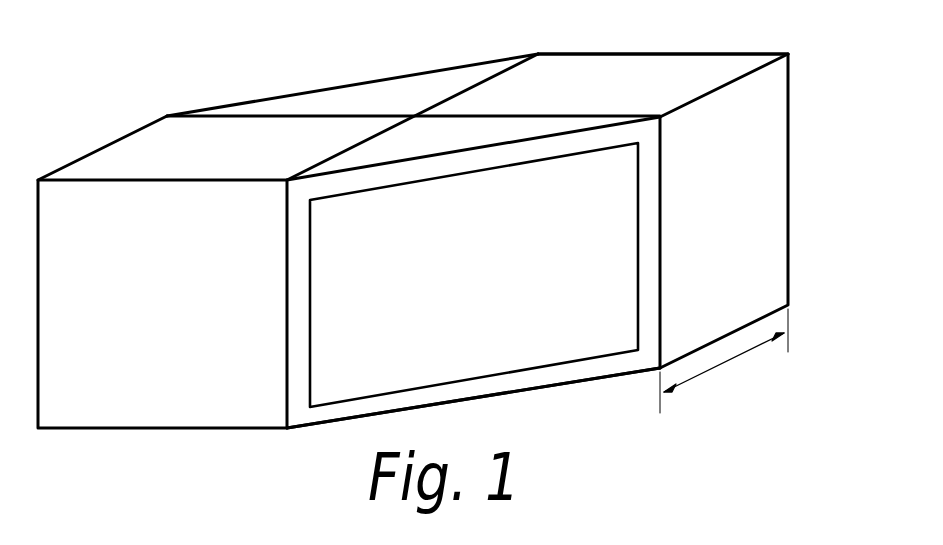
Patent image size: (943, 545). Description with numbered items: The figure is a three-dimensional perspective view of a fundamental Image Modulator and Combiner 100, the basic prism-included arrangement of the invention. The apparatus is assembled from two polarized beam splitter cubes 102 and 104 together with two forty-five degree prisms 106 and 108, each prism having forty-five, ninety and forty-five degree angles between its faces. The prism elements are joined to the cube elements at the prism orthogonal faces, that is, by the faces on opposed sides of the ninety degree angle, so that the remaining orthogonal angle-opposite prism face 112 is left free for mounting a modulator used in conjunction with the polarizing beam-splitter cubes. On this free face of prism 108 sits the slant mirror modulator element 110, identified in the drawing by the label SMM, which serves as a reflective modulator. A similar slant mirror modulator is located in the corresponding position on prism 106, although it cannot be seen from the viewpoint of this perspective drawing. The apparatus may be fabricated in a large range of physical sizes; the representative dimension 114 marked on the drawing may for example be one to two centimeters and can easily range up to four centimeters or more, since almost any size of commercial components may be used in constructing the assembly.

The Image Modulator and Combiner 100 is at (372, 40).
The polarized beam splitter cube 102 is at (95, 150).
The polarized beam splitter cube 104 is at (688, 54).
The 45 degree prism 106 is at (450, 66).
The 45 degree prism 108 is at (552, 390).
The slant mirror modulator element 110 is at (310, 325).
The orthogonal angle-opposite prism face 112 is at (650, 163).
The representative dimension 114 is at (724, 362).
The slant mirror modulator SMM is at (638, 198).